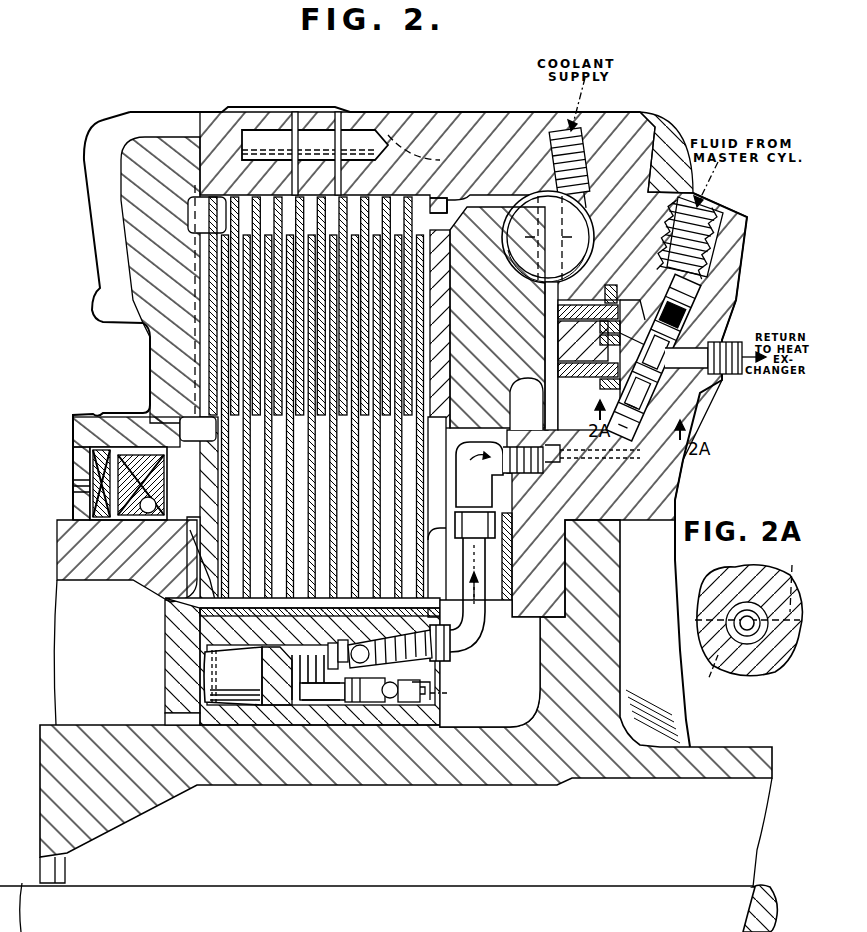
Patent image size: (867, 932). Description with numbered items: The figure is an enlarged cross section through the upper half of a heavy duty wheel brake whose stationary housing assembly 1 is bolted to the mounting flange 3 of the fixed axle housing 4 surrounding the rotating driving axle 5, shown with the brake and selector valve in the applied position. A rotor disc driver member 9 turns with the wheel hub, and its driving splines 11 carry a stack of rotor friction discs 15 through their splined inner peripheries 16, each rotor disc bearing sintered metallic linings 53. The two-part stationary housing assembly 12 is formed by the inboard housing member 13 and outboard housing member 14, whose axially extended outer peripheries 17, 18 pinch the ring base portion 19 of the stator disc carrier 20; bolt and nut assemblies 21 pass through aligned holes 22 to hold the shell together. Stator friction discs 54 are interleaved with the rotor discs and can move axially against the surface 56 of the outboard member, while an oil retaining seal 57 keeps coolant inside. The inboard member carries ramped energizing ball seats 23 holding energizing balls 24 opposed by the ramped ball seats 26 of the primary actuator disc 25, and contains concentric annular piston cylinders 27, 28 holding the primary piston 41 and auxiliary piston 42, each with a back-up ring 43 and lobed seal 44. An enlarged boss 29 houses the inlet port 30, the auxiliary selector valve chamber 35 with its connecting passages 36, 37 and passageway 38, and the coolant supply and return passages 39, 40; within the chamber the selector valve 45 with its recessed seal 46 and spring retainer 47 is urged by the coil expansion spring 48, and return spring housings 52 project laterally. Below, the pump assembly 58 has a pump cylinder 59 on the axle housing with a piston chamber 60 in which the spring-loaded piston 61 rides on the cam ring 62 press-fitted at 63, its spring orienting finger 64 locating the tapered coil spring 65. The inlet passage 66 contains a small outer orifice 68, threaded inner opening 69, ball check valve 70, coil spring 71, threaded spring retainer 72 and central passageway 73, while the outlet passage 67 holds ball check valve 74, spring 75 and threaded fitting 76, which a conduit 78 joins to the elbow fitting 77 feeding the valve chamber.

In FIG. 2, the stationary housing assembly 1 is at (448, 110).
In FIG. 2, the mounting flange 3 is at (595, 641).
In FIG. 2, the axle housing 4 is at (215, 760).
In FIG. 2, the driving axle 5 is at (473, 895).
In FIG. 2, the rotor disc driver member 9 is at (92, 556).
In FIG. 2, the driving splines 11 is at (432, 570).
In FIG. 2, the two-part stationary housing assembly 12 is at (383, 110).
In FIG. 2, the inboard housing member 13 is at (588, 178).
In FIG. 2, the outboard housing member 14 is at (160, 162).
In FIG. 2, the rotor friction discs 15 is at (222, 480).
In FIG. 2, the splined inner peripheries 16 is at (199, 550).
In FIG. 2, the outer periphery of inboard housing member 17 is at (357, 118).
In FIG. 2, the outer periphery of outboard housing member 18 is at (268, 120).
In FIG. 2, the ring base portion 19 is at (305, 128).
In FIG. 2, the stator disc carrier 20 is at (326, 105).
In FIG. 2, the bolt and nut assemblies 21 is at (255, 133).
In FIG. 2, the aligned holes 22 is at (405, 127).
In FIG. 2, the ramped energizing ball seats 23 is at (588, 230).
In FIG. 2, the energizing balls 24 is at (548, 237).
In FIG. 2, the primary actuator disc 25 is at (440, 228).
In FIG. 2, the ramped ball seats 26 is at (447, 212).
In FIG. 2, the annular piston cylinder 27 is at (590, 303).
In FIG. 2, the annular piston cylinder 28 is at (583, 341).
In FIG. 2, the enlarged boss 29 is at (657, 128).
In FIG. 2, the inlet port 30 is at (722, 204).
In FIG. 2, the auxiliary selector valve chamber 35 is at (705, 303).
In FIG. 2A, the auxiliary selector valve chamber 35 is at (728, 610).
In FIG. 2, the connecting passage 36 is at (640, 305).
In FIG. 2, the connecting passage 37 is at (630, 334).
In FIG. 2A, the connecting passage 37 is at (728, 657).
In FIG. 2, the passageway 38 is at (526, 404).
In FIG. 2, the oil coolant supply passage 39 is at (563, 132).
In FIG. 2, the oil coolant return passage 40 is at (742, 330).
In FIG. 2A, the oil coolant return passage 40 is at (752, 583).
In FIG. 2, the primary piston 41 is at (605, 332).
In FIG. 2, the auxiliary piston 42 is at (588, 379).
In FIG. 2, the back-up ring 43 is at (590, 349).
In FIG. 2, the resilient annular lobed seal 44 is at (615, 290).
In FIG. 2, the selector valve 45 is at (665, 352).
In FIG. 2, the annularly recessed seal 46 is at (712, 320).
In FIG. 2, the spring retainer 47 is at (655, 400).
In FIG. 2A, the spring retainer 47 is at (750, 600).
In FIG. 2, the coil expansion spring 48 is at (645, 452).
In FIG. 2A, the coil expansion spring 48 is at (745, 640).
In FIG. 2, the return spring housings 52 is at (672, 503).
In FIG. 2, the sintered metallic linings 53 is at (218, 215).
In FIG. 2, the stator friction discs 54 is at (400, 212).
In FIG. 2, the surface 56 is at (207, 262).
In FIG. 2, the oil retaining seal 57 is at (100, 498).
In FIG. 2, the pump assembly 58 is at (262, 726).
In FIG. 2, the pump cylinder 59 is at (270, 618).
In FIG. 2, the piston chamber 60 is at (290, 632).
In FIG. 2, the spring-loaded piston 61 is at (233, 676).
In FIG. 2, the cam ring 62 is at (180, 672).
In FIG. 2, the press-fit location 63 is at (160, 592).
In FIG. 2, the spring orienting finger 64 is at (270, 684).
In FIG. 2, the tapered coil spring 65 is at (300, 705).
In FIG. 2, the inlet passage 66 is at (388, 702).
In FIG. 2, the outlet passage 67 is at (410, 607).
In FIG. 2, the small outer orifice 68 is at (428, 711).
In FIG. 2, the threaded inner opening 69 is at (330, 705).
In FIG. 2, the ball check valve 70 is at (420, 690).
In FIG. 2, the coil spring 71 is at (402, 703).
In FIG. 2, the threaded spring retainer 72 is at (350, 705).
In FIG. 2, the central passageway 73 is at (372, 700).
In FIG. 2, the ball check valve 74 is at (329, 643).
In FIG. 2, the spring 75 is at (351, 639).
In FIG. 2, the threaded fitting 76 is at (450, 663).
In FIG. 2, the elbow fitting 77 is at (499, 474).
In FIG. 2, the conduit 78 is at (480, 631).